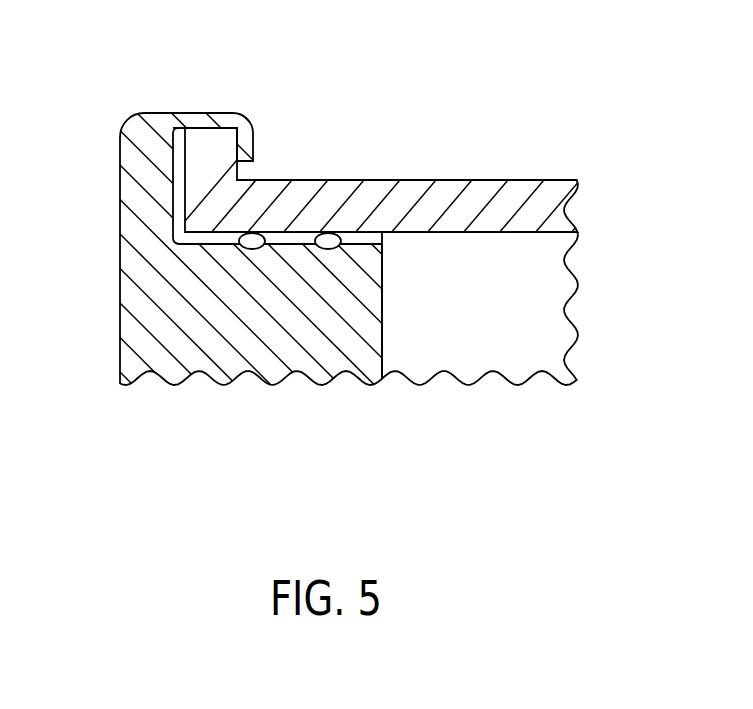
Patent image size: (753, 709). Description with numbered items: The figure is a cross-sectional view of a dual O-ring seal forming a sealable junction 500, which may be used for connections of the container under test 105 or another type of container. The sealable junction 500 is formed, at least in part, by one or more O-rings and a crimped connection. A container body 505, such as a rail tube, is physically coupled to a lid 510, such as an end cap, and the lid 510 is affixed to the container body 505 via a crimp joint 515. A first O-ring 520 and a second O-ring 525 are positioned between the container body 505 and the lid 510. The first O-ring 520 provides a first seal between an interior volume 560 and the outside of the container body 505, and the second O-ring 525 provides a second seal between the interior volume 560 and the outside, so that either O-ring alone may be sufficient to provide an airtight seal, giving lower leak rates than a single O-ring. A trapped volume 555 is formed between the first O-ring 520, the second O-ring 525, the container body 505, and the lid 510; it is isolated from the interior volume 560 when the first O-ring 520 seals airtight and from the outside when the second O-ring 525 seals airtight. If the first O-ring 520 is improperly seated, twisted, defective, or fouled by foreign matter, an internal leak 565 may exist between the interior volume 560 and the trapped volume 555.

The container under test 105 is at (413, 43).
The sealable junction 500 is at (490, 139).
The container body 505 is at (567, 210).
The lid 510 is at (120, 327).
The crimp joint 515 is at (180, 104).
The first O-ring 520 is at (334, 231).
The second O-ring 525 is at (259, 234).
The trapped volume 555 is at (292, 258).
The interior volume 560 is at (498, 310).
The internal leak 565 is at (346, 226).